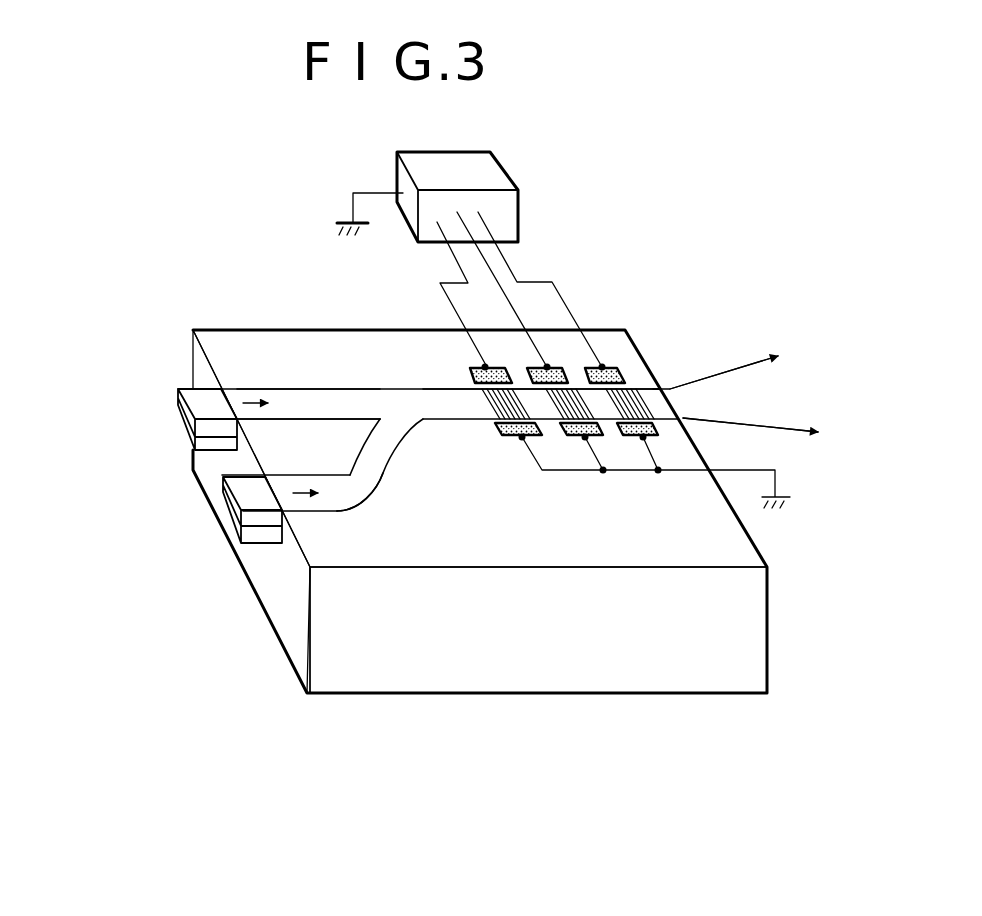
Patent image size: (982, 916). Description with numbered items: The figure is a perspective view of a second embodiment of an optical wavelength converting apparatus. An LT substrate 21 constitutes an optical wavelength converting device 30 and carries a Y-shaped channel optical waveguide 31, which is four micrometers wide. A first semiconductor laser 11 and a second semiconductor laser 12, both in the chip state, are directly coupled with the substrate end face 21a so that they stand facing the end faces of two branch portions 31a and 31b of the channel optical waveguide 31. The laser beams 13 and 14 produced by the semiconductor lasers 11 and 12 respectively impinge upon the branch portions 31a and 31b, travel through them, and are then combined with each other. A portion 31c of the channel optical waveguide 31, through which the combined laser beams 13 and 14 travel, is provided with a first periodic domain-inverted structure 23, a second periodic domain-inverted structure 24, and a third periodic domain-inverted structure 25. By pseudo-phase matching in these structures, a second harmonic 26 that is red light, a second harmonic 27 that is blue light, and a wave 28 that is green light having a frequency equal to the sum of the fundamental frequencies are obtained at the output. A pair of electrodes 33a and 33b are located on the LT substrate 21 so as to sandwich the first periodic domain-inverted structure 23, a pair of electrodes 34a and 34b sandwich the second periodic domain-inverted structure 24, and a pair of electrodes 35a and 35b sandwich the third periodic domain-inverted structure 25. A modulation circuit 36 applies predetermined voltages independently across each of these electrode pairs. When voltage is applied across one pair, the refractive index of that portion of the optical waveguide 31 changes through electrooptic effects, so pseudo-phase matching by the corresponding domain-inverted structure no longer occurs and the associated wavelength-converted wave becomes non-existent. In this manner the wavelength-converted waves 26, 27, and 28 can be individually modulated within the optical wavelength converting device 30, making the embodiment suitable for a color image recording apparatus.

The first semiconductor laser 11 is at (200, 397).
The second semiconductor laser 12 is at (243, 487).
The laser beam 13 is at (253, 400).
The laser beam 14 is at (308, 490).
The LT substrate 21 is at (452, 668).
The substrate end face 21a is at (290, 604).
The first periodic domain-inverted structure 23 is at (487, 393).
The second periodic domain-inverted structure 24 is at (560, 392).
The third periodic domain-inverted structure 25 is at (637, 395).
The second harmonic 26 is at (745, 360).
The second harmonic 27 is at (750, 425).
The wave 28 is at (744, 394).
The optical wavelength converting device 30 is at (583, 699).
The channel optical waveguide 31 is at (409, 455).
The branch portion 31a is at (308, 400).
The branch portion 31b is at (370, 477).
The portion of the channel optical waveguide 31c is at (452, 390).
The electrode 33a is at (500, 437).
The electrode 33b is at (467, 367).
The electrode 34a is at (600, 440).
The electrode 34b is at (509, 332).
The electrode 35a is at (660, 437).
The electrode 35b is at (617, 367).
The modulation circuit 36 is at (487, 172).